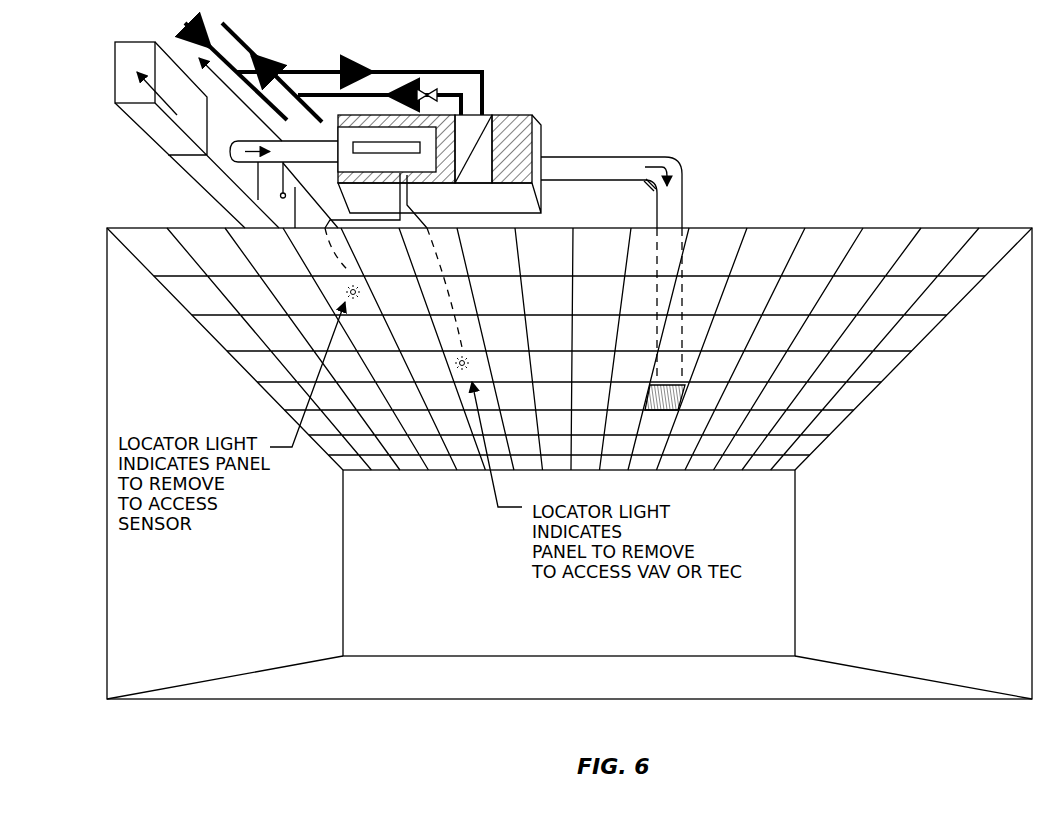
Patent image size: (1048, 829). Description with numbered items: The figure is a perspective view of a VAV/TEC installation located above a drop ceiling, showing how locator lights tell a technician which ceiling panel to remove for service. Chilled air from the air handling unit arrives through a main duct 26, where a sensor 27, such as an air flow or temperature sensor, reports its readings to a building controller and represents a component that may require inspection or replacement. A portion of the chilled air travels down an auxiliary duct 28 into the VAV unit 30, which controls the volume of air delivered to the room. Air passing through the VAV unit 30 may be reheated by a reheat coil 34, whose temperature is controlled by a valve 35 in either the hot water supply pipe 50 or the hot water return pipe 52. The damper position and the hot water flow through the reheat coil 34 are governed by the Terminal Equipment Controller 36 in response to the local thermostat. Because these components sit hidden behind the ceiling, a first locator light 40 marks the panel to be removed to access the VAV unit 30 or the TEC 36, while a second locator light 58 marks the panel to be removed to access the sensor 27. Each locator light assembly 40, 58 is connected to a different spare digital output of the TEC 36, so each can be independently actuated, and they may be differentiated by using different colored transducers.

The main duct 26 is at (168, 142).
The sensor 27 is at (281, 196).
The auxiliary duct 28 is at (316, 150).
The VAV unit 30 is at (449, 152).
The reheat coil 34 is at (480, 152).
The valve 35 is at (428, 92).
The Terminal Equipment Controller 36 is at (342, 170).
The first locator light 40 is at (468, 302).
The hot water supply pipe 50 is at (408, 72).
The hot water return pipe 52 is at (335, 93).
The second locator light 58 is at (355, 259).